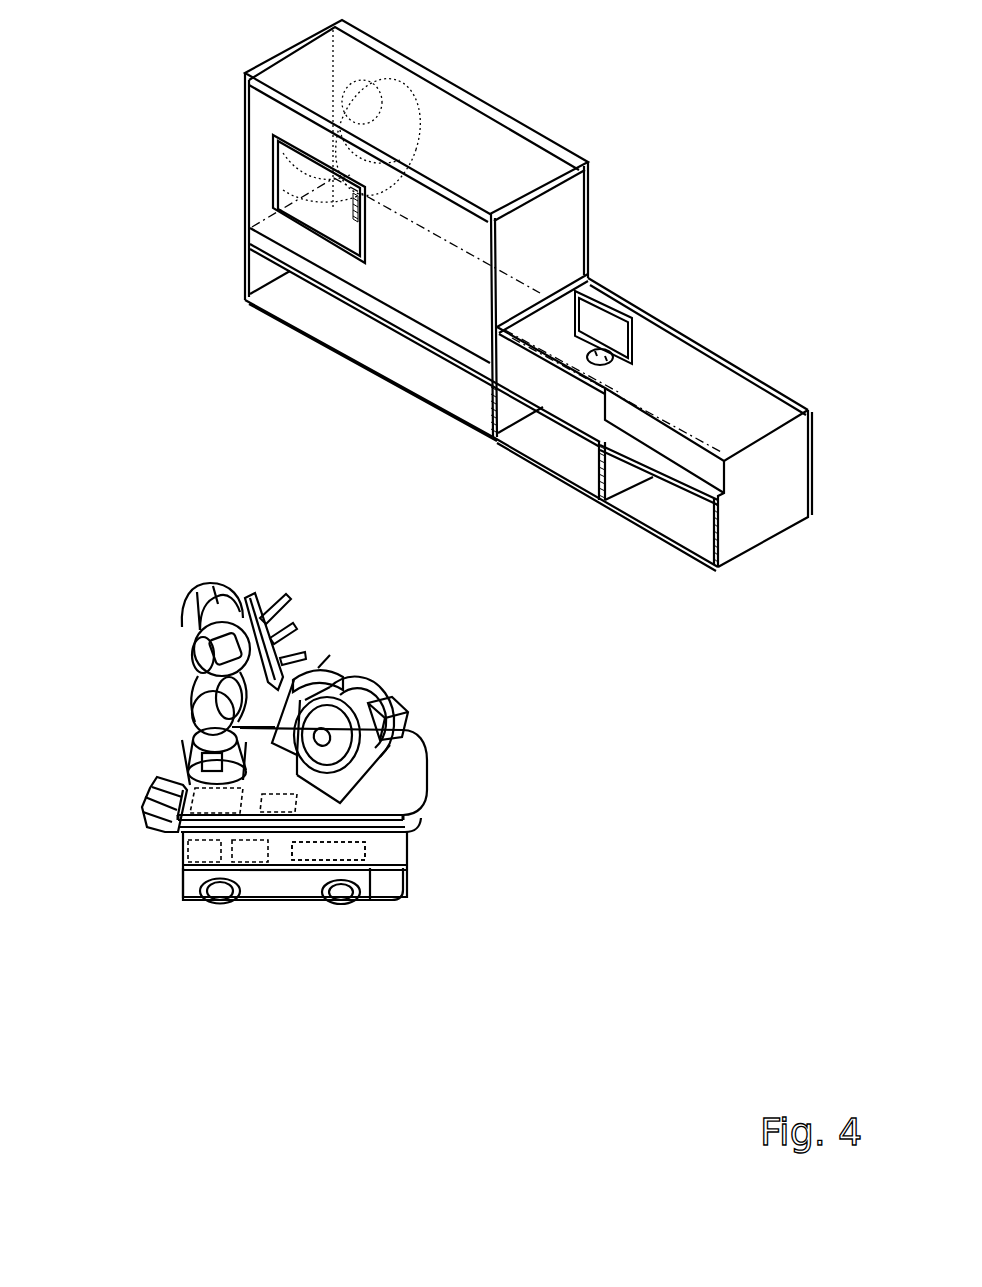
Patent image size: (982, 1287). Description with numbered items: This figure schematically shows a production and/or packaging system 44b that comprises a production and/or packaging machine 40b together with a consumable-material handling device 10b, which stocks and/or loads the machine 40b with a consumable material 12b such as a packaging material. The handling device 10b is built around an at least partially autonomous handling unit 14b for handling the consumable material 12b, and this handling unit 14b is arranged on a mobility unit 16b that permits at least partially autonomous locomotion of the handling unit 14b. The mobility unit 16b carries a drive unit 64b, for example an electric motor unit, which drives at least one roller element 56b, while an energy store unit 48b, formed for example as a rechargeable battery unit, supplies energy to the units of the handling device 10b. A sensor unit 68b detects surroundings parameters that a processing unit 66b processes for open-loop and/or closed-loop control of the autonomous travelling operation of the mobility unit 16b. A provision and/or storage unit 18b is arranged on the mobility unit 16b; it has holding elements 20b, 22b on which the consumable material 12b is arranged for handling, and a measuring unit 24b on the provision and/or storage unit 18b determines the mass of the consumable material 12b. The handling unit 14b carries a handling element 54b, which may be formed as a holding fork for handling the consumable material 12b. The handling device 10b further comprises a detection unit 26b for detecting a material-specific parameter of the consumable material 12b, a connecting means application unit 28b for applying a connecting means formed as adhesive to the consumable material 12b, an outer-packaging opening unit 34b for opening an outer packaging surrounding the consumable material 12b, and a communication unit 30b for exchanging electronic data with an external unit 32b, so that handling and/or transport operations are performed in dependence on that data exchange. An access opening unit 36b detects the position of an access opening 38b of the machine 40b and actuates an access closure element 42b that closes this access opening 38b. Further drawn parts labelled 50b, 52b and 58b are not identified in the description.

The consumable-material handling device 10b is at (307, 955).
The consumable material 12b is at (367, 713).
The handling unit 14b is at (311, 607).
The mobility unit 16b is at (333, 925).
The provision and/or storage unit 18b is at (422, 727).
The holding element 20b is at (370, 770).
The holding element 22b is at (318, 668).
The measuring unit 24b is at (368, 793).
The detection unit 26b is at (195, 625).
The connecting means application unit 28b is at (200, 660).
The communication unit 30b is at (192, 898).
The external unit 32b is at (613, 297).
The outer-packaging opening unit 34b is at (330, 655).
The access opening unit 36b is at (297, 598).
The access opening 38b is at (333, 174).
The production and/or packaging machine 40b is at (208, 266).
The access closure element 42b is at (300, 198).
The production and/or packaging system 44b is at (695, 118).
The energy store unit 48b is at (370, 855).
The arm lower link 50b is at (190, 712).
The arm base 52b is at (190, 765).
The handling element 54b is at (266, 596).
The roller element 56b is at (347, 907).
The bumper 58b is at (148, 848).
The drive unit 64b is at (272, 880).
The processing unit 66b is at (283, 875).
The sensor unit 68b is at (197, 870).